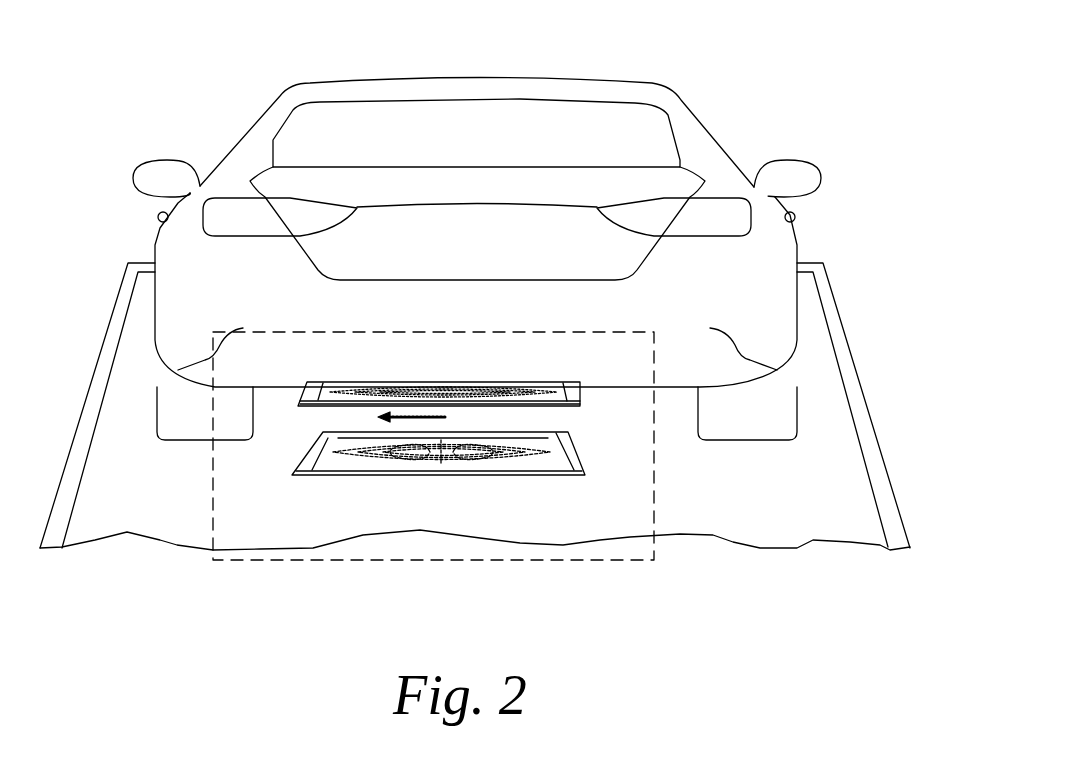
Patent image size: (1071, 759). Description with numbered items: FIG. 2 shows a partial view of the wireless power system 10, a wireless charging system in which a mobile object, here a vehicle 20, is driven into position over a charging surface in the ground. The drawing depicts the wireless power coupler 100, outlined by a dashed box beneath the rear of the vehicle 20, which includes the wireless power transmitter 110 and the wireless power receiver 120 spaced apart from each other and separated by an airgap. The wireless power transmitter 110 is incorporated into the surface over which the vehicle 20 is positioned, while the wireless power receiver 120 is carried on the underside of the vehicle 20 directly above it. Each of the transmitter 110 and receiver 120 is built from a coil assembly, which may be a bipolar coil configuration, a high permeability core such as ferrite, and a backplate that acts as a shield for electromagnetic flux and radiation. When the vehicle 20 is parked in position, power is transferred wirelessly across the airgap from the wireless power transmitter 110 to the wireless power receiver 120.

The wireless power system 10 is at (742, 92).
The vehicle 20 is at (253, 125).
The wireless power coupler 100 is at (240, 561).
The wireless power transmitter 110 is at (352, 470).
The wireless power receiver 120 is at (512, 384).